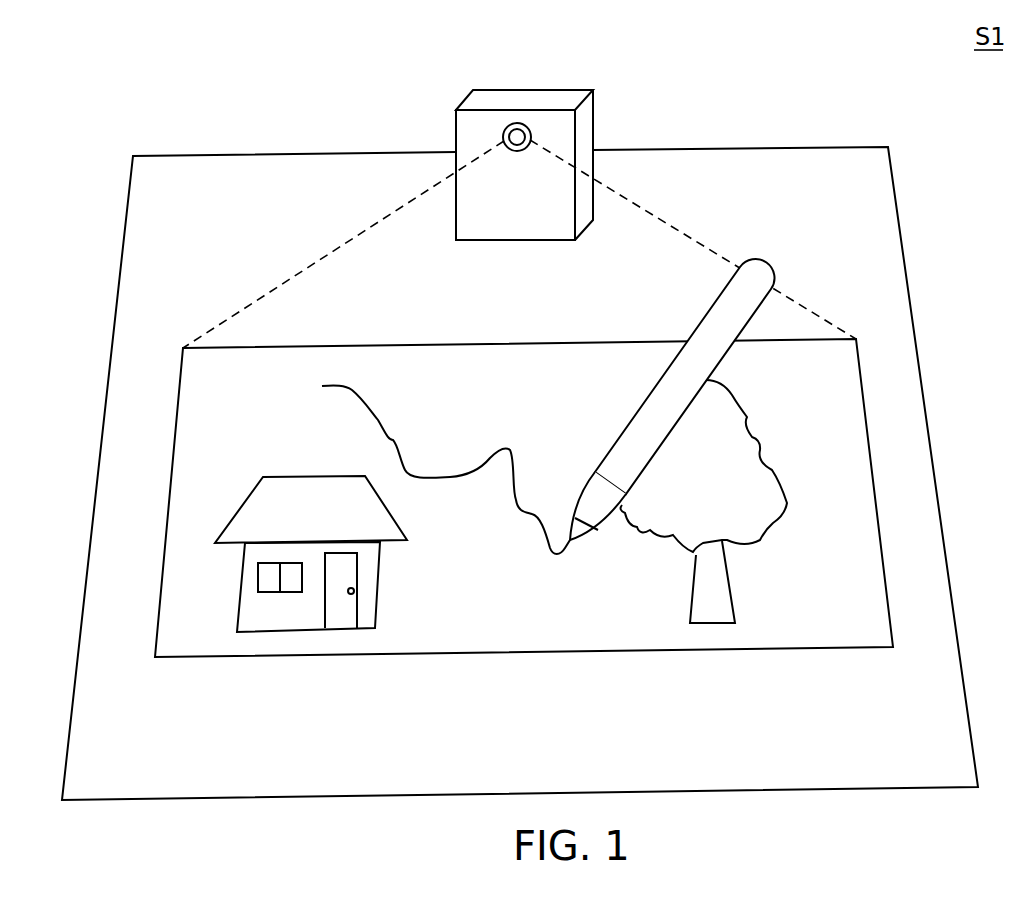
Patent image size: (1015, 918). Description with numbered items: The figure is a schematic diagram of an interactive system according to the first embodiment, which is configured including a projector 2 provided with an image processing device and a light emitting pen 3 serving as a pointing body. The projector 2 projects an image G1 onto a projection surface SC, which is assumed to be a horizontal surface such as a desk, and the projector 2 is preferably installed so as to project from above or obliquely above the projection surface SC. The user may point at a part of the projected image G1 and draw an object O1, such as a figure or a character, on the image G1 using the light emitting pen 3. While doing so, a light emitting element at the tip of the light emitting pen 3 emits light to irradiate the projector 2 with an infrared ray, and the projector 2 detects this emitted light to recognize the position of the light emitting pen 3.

The projector 2 is at (538, 90).
The light emitting pen 3 is at (758, 269).
The projection surface SC is at (815, 147).
The image G1 is at (870, 435).
The object O1 is at (393, 440).